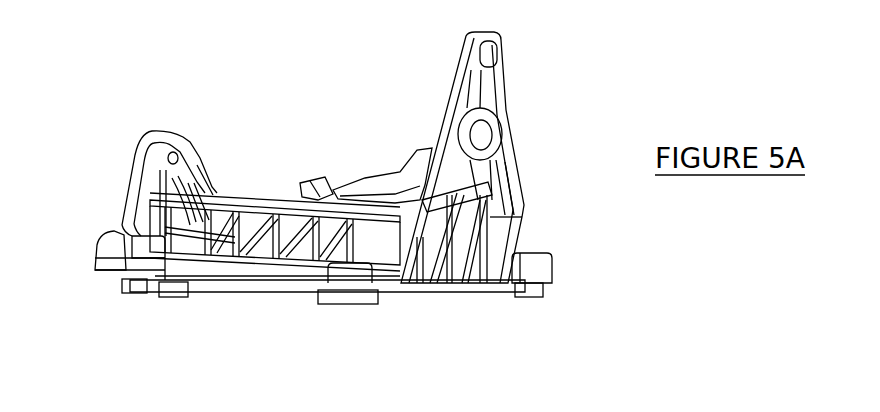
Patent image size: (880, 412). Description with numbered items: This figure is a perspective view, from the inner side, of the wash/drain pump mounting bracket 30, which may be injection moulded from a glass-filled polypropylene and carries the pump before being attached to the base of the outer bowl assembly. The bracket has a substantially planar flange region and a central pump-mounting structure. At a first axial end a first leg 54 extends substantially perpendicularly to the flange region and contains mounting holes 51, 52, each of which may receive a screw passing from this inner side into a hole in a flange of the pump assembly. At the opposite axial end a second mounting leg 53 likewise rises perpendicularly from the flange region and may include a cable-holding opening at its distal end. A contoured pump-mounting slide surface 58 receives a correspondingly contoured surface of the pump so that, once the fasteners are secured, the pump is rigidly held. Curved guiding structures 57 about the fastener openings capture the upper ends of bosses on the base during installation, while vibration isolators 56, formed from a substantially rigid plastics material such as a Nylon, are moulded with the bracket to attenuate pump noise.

The mounting bracket 30 is at (155, 73).
The mounting hole 51 is at (318, 178).
The mounting hole 52 is at (177, 153).
The second mounting leg 53 is at (458, 100).
The first leg 54 is at (130, 193).
The vibration isolators 56 is at (115, 278).
The curved guiding structures 57 is at (318, 298).
The contoured pump-mounting slide surface 58 is at (413, 163).